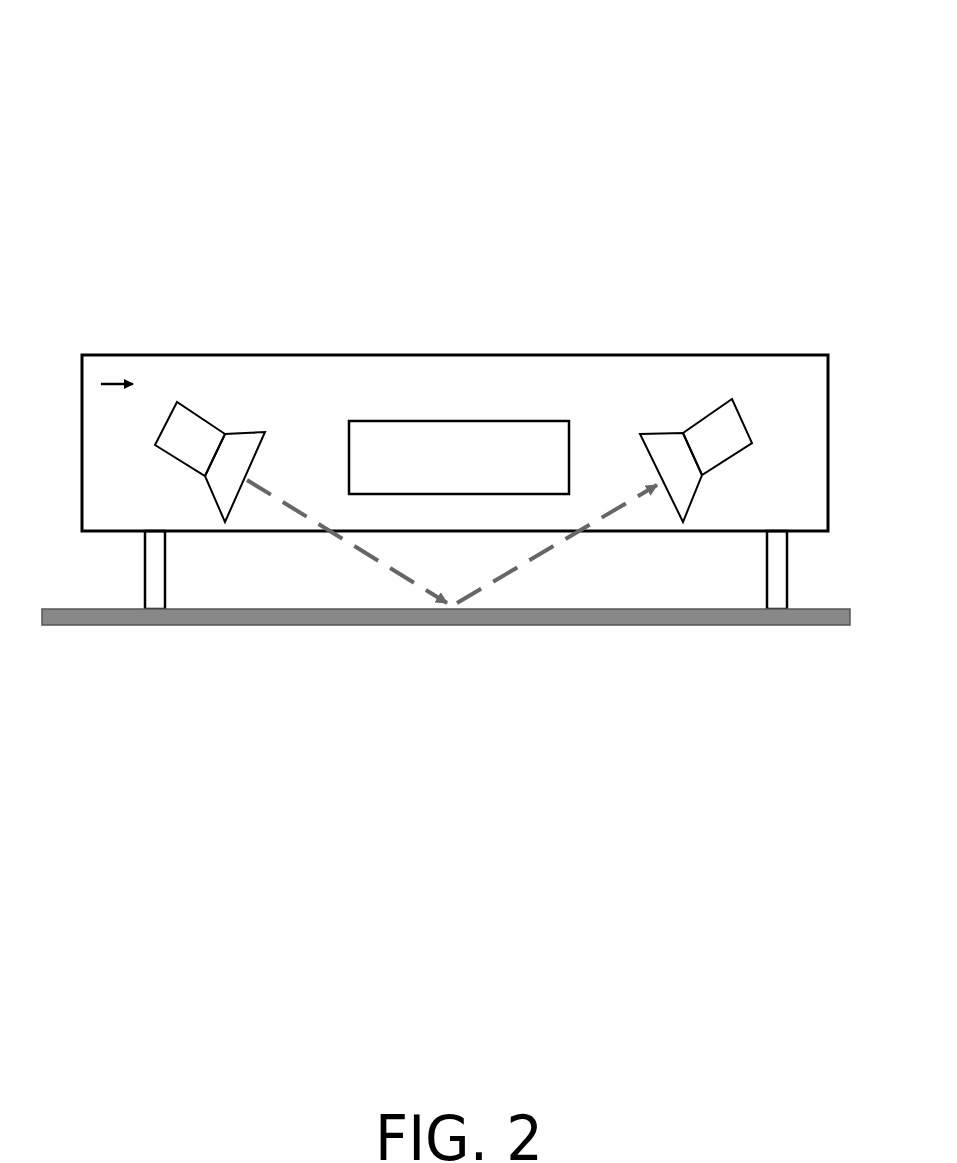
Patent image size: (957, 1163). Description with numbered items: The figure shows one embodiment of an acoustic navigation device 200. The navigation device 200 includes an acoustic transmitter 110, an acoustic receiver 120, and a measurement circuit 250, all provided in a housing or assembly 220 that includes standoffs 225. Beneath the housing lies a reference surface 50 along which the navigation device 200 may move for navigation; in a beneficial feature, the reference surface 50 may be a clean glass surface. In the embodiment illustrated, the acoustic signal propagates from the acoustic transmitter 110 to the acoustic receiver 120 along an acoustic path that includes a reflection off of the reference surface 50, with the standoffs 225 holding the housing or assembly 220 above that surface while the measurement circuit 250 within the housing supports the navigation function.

The acoustic navigation device 200 is at (800, 36).
The housing or assembly 220 is at (384, 350).
The measurement circuit 250 is at (509, 403).
The acoustic transmitter 110 is at (208, 403).
The acoustic receiver 120 is at (698, 403).
The standoffs 225 is at (175, 577).
The reference surface 50 is at (809, 626).